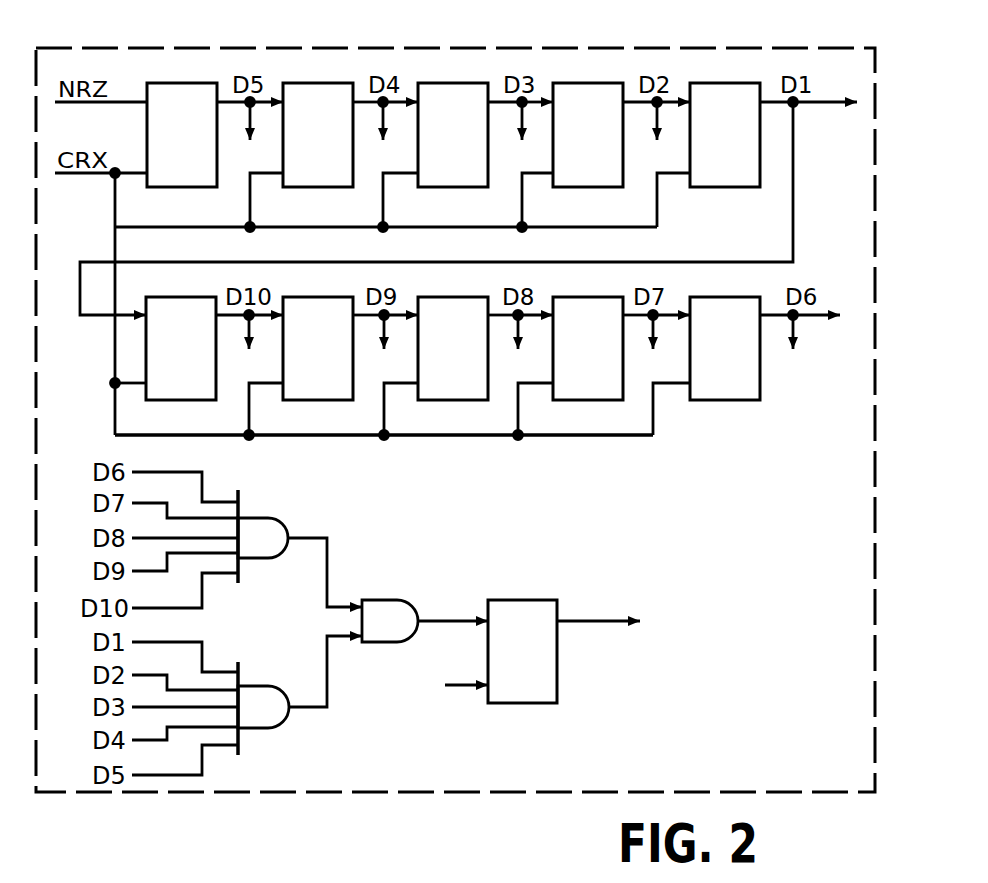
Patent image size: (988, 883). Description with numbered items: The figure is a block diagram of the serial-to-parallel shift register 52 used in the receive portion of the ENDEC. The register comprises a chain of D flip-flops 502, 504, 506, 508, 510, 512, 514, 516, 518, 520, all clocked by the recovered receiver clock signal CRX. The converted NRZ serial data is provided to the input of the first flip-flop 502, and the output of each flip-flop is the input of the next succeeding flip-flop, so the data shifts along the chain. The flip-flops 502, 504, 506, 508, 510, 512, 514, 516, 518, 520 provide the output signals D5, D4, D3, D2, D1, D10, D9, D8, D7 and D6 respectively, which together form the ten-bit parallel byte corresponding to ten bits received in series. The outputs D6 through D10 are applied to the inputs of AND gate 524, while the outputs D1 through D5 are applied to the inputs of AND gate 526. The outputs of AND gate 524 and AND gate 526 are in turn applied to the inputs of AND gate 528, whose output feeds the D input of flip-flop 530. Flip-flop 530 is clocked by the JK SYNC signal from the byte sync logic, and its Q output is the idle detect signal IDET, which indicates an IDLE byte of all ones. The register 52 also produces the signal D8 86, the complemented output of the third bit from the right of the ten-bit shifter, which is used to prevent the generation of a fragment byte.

The serial-to-parallel shift register 52 is at (738, 719).
The D8 signal 86 is at (477, 436).
The D flip-flop 502 is at (176, 83).
The D flip-flop 504 is at (323, 83).
The D flip-flop 506 is at (460, 83).
The D flip-flop 508 is at (592, 83).
The D flip-flop 510 is at (723, 83).
The D flip-flop 512 is at (197, 297).
The D flip-flop 514 is at (320, 297).
The D flip-flop 516 is at (462, 297).
The D flip-flop 518 is at (582, 297).
The D flip-flop 520 is at (710, 297).
The AND gate 524 is at (287, 520).
The AND gate 526 is at (287, 727).
The AND gate 528 is at (398, 600).
The D flip-flop 530 is at (530, 600).